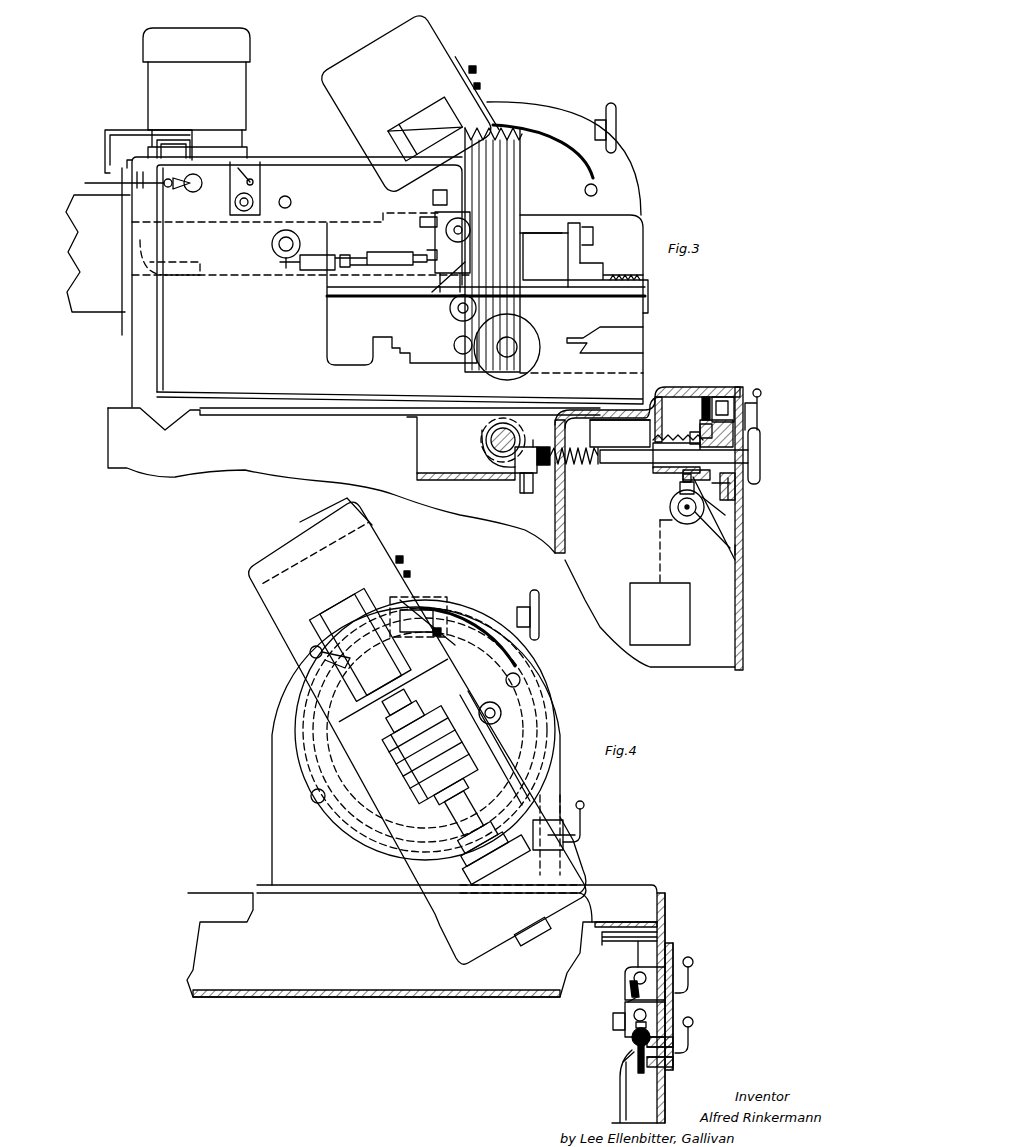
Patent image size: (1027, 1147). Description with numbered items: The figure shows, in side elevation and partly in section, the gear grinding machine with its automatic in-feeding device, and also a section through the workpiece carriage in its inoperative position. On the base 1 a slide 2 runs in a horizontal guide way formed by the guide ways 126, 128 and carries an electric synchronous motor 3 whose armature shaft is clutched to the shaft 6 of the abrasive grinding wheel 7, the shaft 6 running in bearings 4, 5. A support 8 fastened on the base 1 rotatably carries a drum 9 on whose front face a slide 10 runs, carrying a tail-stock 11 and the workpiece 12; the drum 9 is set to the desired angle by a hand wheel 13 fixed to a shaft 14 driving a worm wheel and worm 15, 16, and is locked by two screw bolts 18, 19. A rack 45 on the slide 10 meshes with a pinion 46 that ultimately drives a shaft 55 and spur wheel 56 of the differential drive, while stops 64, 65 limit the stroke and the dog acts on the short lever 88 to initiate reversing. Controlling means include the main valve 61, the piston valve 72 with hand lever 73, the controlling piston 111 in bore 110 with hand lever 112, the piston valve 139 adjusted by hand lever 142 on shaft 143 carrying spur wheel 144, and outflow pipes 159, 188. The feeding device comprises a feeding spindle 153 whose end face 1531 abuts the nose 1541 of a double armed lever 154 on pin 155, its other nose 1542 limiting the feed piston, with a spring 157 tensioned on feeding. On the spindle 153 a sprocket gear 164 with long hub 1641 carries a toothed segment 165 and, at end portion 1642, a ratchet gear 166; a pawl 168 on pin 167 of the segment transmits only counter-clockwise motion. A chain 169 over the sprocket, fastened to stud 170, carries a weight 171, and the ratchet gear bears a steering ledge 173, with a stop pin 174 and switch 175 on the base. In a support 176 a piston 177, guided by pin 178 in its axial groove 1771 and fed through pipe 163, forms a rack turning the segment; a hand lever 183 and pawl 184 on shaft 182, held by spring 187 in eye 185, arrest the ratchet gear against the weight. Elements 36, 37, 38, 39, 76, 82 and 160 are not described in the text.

In FIG. 3, the base 1 is at (565, 520).
In FIG. 4, the base 1 is at (422, 941).
In FIG. 3, the slide 2 is at (390, 282).
In FIG. 3, the electric synchronous motor 3 is at (99, 247).
In FIG. 3, the bearing 4 is at (178, 285).
In FIG. 3, the bearing 5 is at (398, 278).
In FIG. 3, the shaft 6 is at (250, 262).
In FIG. 3, the abrasive grinding wheel 7 is at (520, 160).
In FIG. 3, the support 8 is at (628, 200).
In FIG. 4, the support 8 is at (429, 750).
In FIG. 3, the drum 9 is at (543, 160).
In FIG. 4, the drum 9 is at (425, 730).
In FIG. 3, the slide 10 is at (408, 102).
In FIG. 4, the slide 10 is at (419, 735).
In FIG. 3, the tail-stock 11 is at (425, 129).
In FIG. 4, the tail-stock 11 is at (360, 644).
In FIG. 4, the workpiece 12 is at (470, 770).
In FIG. 3, the hand wheel 13 is at (617, 148).
In FIG. 4, the hand wheel 13 is at (539, 603).
In FIG. 4, the shaft 14 is at (500, 612).
In FIG. 4, the worm wheel 15 is at (420, 615).
In FIG. 4, the worm 16 is at (455, 640).
In FIG. 4, the screw bolt 18 is at (323, 791).
In FIG. 3, the screw bolt 19 is at (585, 190).
In FIG. 4, the screw bolt 19 is at (520, 680).
In FIG. 4, the coupling 36 is at (490, 838).
In FIG. 4, the coupling 37 is at (403, 709).
In FIG. 4, the shaft 38 is at (461, 808).
In FIG. 4, the flange 39 is at (505, 852).
In FIG. 4, the rack 45 is at (500, 755).
In FIG. 4, the pinion 46 is at (501, 713).
In FIG. 4, the shaft 55 is at (631, 992).
In FIG. 4, the spur wheel 56 is at (636, 1050).
In FIG. 4, the main valve 61 is at (634, 1015).
In FIG. 4, the stop 64 is at (440, 628).
In FIG. 3, the stop 65 is at (476, 69).
In FIG. 4, the stop 65 is at (400, 556).
In FIG. 4, the piston valve 72 is at (634, 978).
In FIG. 4, the hand lever 73 is at (688, 987).
In FIG. 4, the wall 76 is at (665, 935).
In FIG. 4, the leaf spring 82 is at (612, 945).
In FIG. 3, the short lever 88 is at (480, 86).
In FIG. 4, the short lever 88 is at (418, 570).
In FIG. 4, the bore 110 is at (560, 820).
In FIG. 4, the controlling piston 111 is at (575, 835).
In FIG. 4, the hand lever 112 is at (584, 810).
In FIG. 3, the guide way 126 is at (185, 420).
In FIG. 3, the guide way 128 is at (647, 406).
In FIG. 4, the piston valve 139 is at (636, 1030).
In FIG. 4, the hand lever 142 is at (688, 1042).
In FIG. 4, the shaft 143 is at (673, 1050).
In FIG. 4, the spur wheel 144 is at (623, 1062).
In FIG. 3, the feeding spindle 153 is at (590, 470).
In FIG. 3, the double armed lever 154 is at (535, 440).
In FIG. 3, the pin 155 is at (529, 460).
In FIG. 3, the spring 157 is at (512, 420).
In FIG. 4, the outflow pipe 159 is at (634, 1032).
In FIG. 4, the tube 160 is at (620, 1100).
In FIG. 4, the pipe 163 is at (613, 1027).
In FIG. 3, the sprocket gear 164 is at (674, 456).
In FIG. 3, the toothed segment 165 is at (680, 490).
In FIG. 3, the ratchet gear 166 is at (725, 515).
In FIG. 3, the pin 167 is at (683, 478).
In FIG. 3, the pawl 168 is at (740, 545).
In FIG. 3, the chain 169 is at (660, 565).
In FIG. 3, the stud 170 is at (670, 508).
In FIG. 3, the weight 171 is at (660, 614).
In FIG. 3, the steering ledge 173 is at (740, 456).
In FIG. 3, the stop pin 174 is at (735, 487).
In FIG. 3, the switch 175 is at (730, 500).
In FIG. 3, the support 176 is at (660, 520).
In FIG. 3, the piston 177 is at (678, 512).
In FIG. 3, the pin 178 is at (687, 512).
In FIG. 3, the shaft 182 is at (724, 406).
In FIG. 3, the hand lever 183 is at (757, 399).
In FIG. 3, the pawl 184 is at (700, 428).
In FIG. 3, the eye 185 is at (706, 397).
In FIG. 3, the spring 187 is at (722, 397).
In FIG. 4, the outflow pipe 188 is at (628, 1002).
In FIG. 3, the end face 1531 is at (609, 430).
In FIG. 3, the nose 1541 is at (536, 492).
In FIG. 3, the nose 1542 is at (498, 460).
In FIG. 3, the long hub 1641 is at (663, 435).
In FIG. 3, the end portion 1642 is at (690, 438).
In FIG. 3, the axial groove 1771 is at (712, 530).